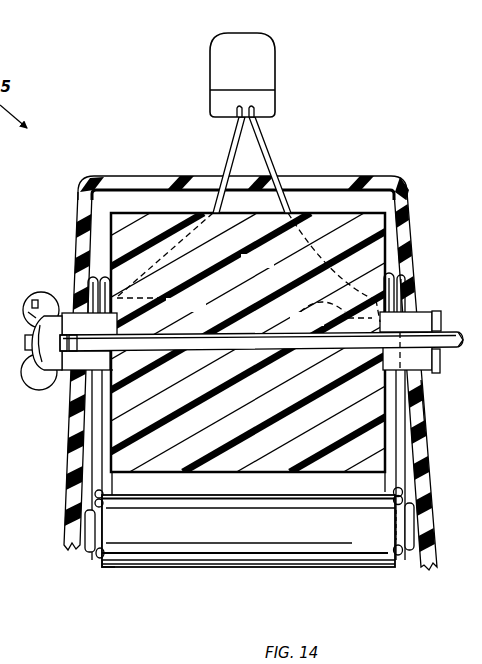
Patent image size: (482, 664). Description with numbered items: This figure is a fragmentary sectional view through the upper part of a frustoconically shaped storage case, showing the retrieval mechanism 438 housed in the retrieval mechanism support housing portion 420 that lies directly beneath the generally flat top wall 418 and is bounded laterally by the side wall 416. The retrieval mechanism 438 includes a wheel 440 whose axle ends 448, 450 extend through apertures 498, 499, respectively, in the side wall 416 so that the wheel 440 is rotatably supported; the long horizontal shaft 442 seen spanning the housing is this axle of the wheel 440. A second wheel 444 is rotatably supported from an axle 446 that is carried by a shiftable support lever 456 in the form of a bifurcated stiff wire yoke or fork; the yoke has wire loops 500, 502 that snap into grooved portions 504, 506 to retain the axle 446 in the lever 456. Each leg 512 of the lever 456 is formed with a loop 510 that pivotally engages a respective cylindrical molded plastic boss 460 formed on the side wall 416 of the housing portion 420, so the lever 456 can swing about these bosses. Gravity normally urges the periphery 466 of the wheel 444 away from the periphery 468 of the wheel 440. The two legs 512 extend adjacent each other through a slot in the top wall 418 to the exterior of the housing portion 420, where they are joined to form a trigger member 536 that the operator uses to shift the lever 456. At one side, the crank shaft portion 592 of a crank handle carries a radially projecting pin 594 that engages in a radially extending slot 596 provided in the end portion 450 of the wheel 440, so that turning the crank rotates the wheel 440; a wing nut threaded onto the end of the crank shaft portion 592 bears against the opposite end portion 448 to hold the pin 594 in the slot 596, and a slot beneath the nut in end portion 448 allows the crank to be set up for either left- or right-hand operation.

The side wall 416 is at (68, 485).
The top wall 418 is at (118, 178).
The retrieval mechanism support housing portion 420 is at (374, 172).
The retrieval mechanism 438 is at (110, 583).
The wheel 440 is at (405, 177).
The bolt rod 442 is at (238, 350).
The wheel 444 is at (293, 558).
The axle 446 is at (86, 535).
The axle end portion 448 is at (64, 312).
The axle end portion 450 is at (400, 293).
The shiftable support lever 456 is at (246, 201).
The cylindrical molded plastic boss 460 is at (258, 334).
The periphery 466 is at (173, 570).
The periphery 468 is at (330, 213).
The aperture 498 is at (62, 371).
The aperture 499 is at (428, 392).
The wire loop 500 is at (28, 313).
The wire loop 502 is at (27, 343).
The grooved portion 504 is at (30, 301).
The grooved portion 506 is at (393, 537).
The loop 510 is at (90, 290).
The leg 512 is at (237, 158).
The trigger member 536 is at (270, 62).
The crank shaft portion 592 is at (466, 333).
The radially projecting pin 594 is at (441, 364).
The radially extending slot 596 is at (441, 321).